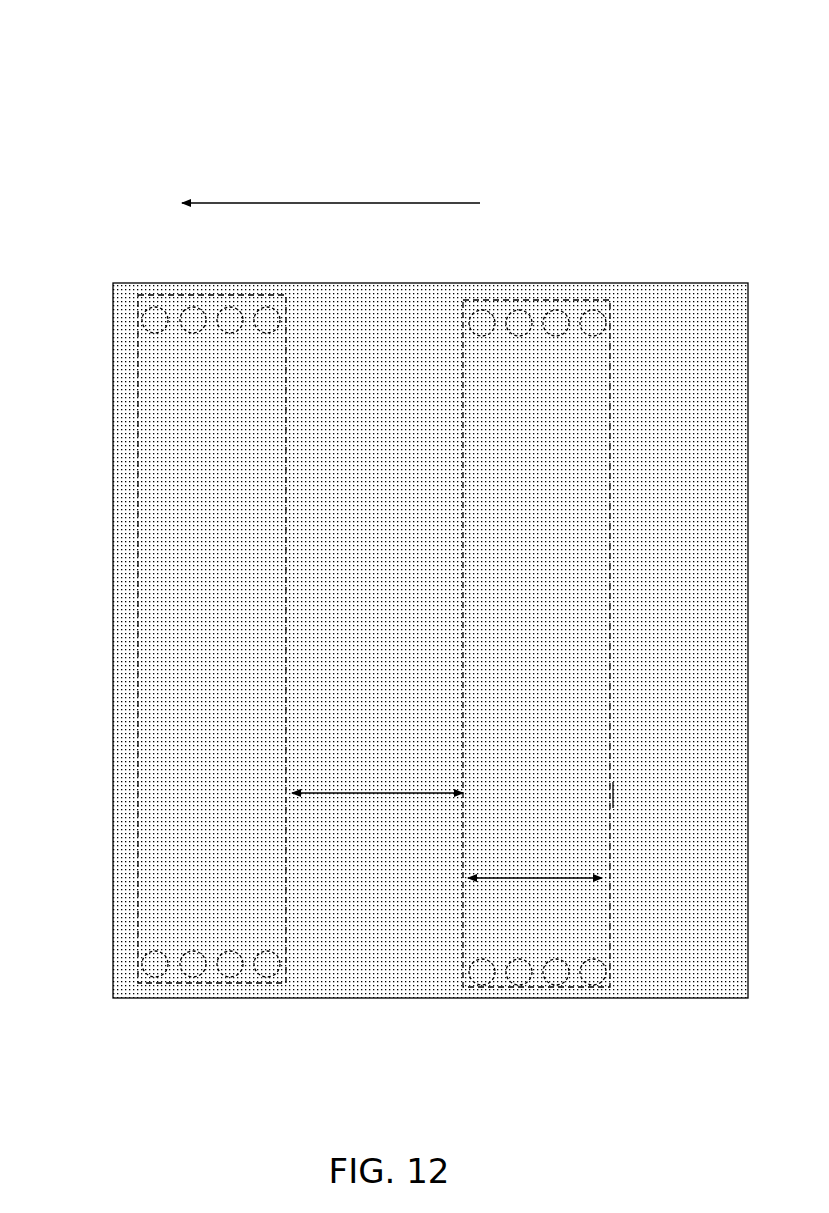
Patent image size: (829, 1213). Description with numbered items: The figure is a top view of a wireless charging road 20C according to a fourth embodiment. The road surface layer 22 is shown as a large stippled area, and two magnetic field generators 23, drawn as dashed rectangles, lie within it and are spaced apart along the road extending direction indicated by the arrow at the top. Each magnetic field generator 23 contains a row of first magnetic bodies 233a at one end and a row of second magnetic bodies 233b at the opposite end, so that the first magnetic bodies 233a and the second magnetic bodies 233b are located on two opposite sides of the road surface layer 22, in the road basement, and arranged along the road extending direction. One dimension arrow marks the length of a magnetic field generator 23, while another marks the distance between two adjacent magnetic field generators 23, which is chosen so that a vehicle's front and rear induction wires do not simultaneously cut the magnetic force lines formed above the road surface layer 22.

The wireless charging road 20C is at (314, 98).
The road surface layer 22 is at (113, 760).
The magnetic field generator 23 is at (138, 890).
The first magnetic body 233a is at (165, 974).
The second magnetic body 233b is at (150, 320).